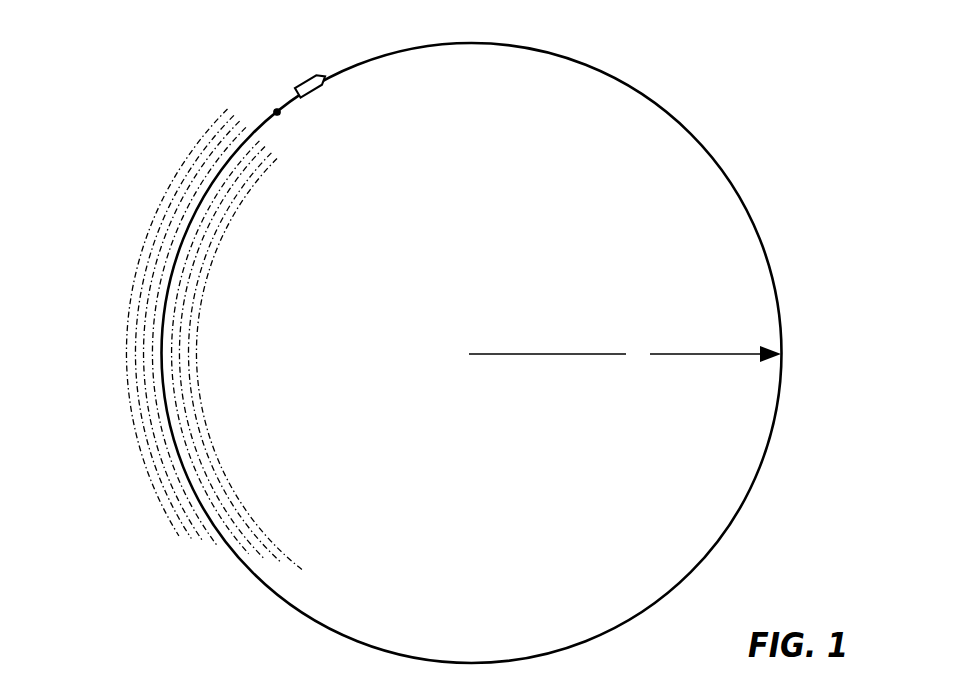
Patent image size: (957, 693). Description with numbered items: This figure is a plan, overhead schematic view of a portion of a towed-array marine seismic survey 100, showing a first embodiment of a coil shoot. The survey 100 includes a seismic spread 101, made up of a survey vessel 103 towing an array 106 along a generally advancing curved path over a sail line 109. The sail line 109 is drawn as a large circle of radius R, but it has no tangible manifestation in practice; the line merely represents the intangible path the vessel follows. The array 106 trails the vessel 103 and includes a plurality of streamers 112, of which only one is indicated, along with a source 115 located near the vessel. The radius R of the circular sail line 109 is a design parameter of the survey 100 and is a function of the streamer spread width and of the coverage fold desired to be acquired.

The towed-array marine seismic survey 100 is at (692, 15).
The seismic spread 101 is at (104, 32).
The survey vessel 103 is at (295, 93).
The array 106 is at (178, 97).
The sail line 109 is at (751, 215).
The streamer 112 is at (178, 173).
The source 115 is at (273, 111).